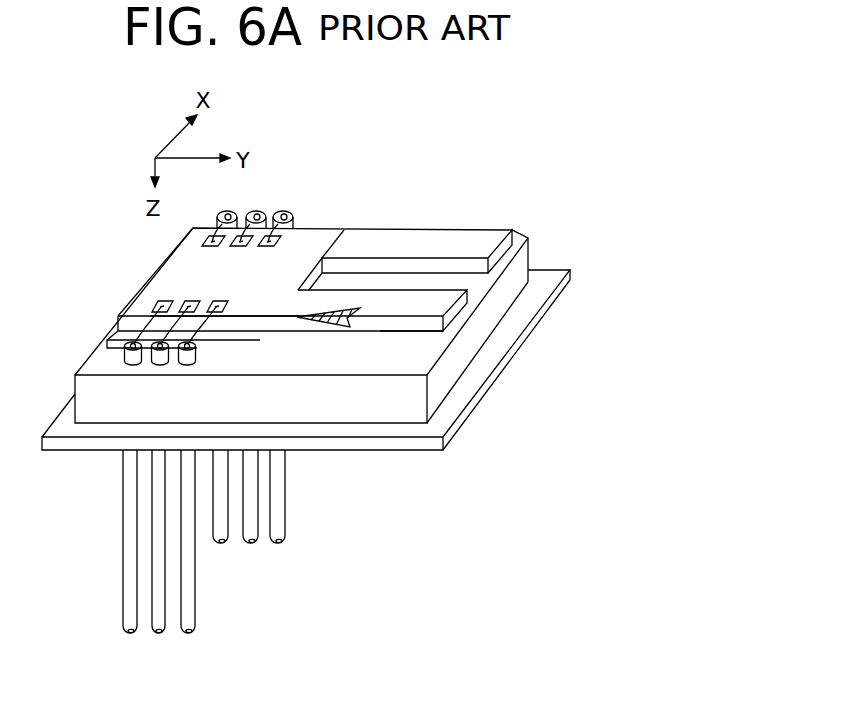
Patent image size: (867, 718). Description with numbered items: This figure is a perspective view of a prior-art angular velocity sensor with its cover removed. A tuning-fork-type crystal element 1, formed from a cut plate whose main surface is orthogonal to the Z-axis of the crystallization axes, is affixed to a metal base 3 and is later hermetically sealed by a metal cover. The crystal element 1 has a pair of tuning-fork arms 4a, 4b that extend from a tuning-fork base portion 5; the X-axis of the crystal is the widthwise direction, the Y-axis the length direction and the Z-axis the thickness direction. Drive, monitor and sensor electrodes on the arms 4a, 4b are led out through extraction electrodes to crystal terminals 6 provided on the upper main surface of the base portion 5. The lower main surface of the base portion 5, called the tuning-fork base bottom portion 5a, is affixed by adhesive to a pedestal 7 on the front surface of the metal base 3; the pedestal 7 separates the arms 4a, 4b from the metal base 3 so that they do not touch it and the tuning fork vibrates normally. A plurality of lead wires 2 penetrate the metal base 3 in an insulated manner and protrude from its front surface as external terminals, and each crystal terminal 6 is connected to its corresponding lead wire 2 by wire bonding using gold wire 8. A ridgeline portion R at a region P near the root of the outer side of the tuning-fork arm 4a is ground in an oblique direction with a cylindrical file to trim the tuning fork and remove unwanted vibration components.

The tuning-fork-type crystal element 1 is at (303, 247).
The lead wires 2 is at (281, 493).
The metal base 3 is at (89, 444).
The tuning-fork arm 4a is at (410, 298).
The tuning-fork arm 4b is at (475, 243).
The tuning-fork base portion 5 is at (207, 270).
The tuning-fork base bottom portion 5a is at (163, 280).
The crystal terminals 6 is at (152, 307).
The pedestal 7 is at (107, 344).
The gold wire 8 is at (114, 322).
The region P is at (333, 330).
The ridgeline portion R is at (417, 333).